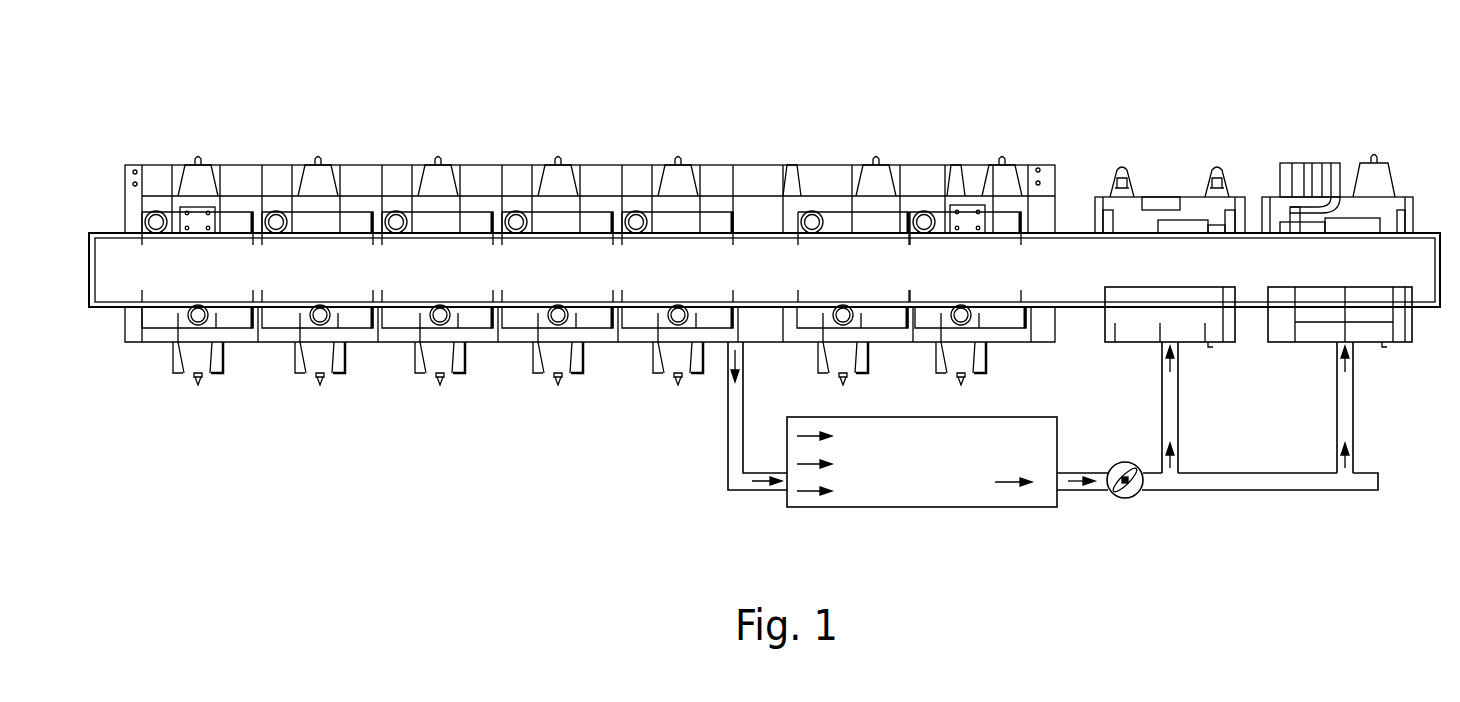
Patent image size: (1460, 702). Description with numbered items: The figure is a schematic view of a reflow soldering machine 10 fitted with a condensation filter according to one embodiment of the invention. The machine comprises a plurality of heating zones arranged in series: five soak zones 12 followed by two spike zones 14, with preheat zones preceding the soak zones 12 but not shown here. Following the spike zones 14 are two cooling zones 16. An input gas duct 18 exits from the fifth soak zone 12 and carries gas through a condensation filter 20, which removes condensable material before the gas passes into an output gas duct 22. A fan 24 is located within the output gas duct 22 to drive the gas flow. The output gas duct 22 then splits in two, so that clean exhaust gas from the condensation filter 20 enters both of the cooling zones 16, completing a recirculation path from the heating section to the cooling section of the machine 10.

The reflow soldering machine 10 is at (755, 78).
The soak zones 12 is at (228, 252).
The spike zones 14 is at (748, 262).
The cooling zones 16 is at (1143, 253).
The input gas duct 18 is at (727, 436).
The condensation filter 20 is at (945, 500).
The output gas duct 22 is at (1200, 483).
The fan 24 is at (1118, 463).